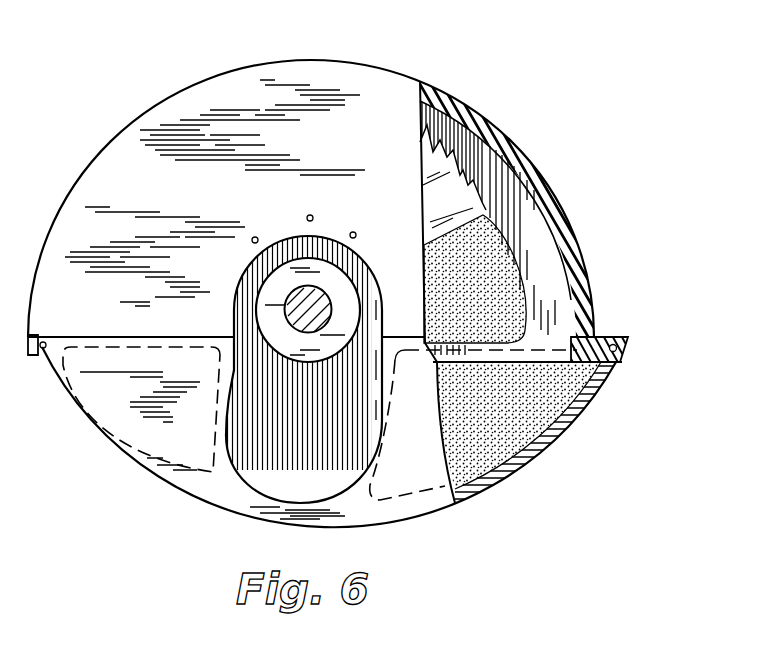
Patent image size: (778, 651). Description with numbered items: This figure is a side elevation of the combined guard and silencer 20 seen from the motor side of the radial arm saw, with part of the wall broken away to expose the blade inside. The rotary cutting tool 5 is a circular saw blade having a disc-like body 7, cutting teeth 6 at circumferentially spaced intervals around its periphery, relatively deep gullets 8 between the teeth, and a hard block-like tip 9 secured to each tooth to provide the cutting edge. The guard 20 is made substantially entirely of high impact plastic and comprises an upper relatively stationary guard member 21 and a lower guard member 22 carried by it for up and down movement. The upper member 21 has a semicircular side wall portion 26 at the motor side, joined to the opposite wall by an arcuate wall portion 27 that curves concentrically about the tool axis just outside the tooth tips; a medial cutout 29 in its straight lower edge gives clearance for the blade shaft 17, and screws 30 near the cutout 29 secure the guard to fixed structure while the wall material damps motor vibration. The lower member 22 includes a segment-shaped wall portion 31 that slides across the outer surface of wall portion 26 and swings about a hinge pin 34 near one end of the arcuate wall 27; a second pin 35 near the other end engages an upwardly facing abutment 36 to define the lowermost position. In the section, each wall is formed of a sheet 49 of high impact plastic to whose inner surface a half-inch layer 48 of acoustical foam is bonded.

The combined guard and silencer 20 is at (385, 285).
The upper guard member 21 is at (311, 272).
The lower guard member 22 is at (408, 526).
The side wall portion 26 is at (110, 156).
The rotary cutting tool 5 is at (492, 152).
The cutting teeth 6 is at (478, 116).
The disc-like body 7 is at (437, 208).
The gullets 8 is at (455, 152).
The block-like tip 9 is at (482, 192).
The arcuate wall portion 27 is at (495, 225).
The layer of acoustical foam 48 is at (490, 256).
The sheet of high impact plastic 49 is at (553, 305).
The medial recess or cutout 29 is at (252, 259).
The blade shaft 17 is at (300, 312).
The screws 30 is at (292, 212).
The wall portion 31 is at (183, 482).
The hinge pin 34 is at (32, 357).
The pin 35 is at (628, 347).
The abutment 36 is at (620, 363).